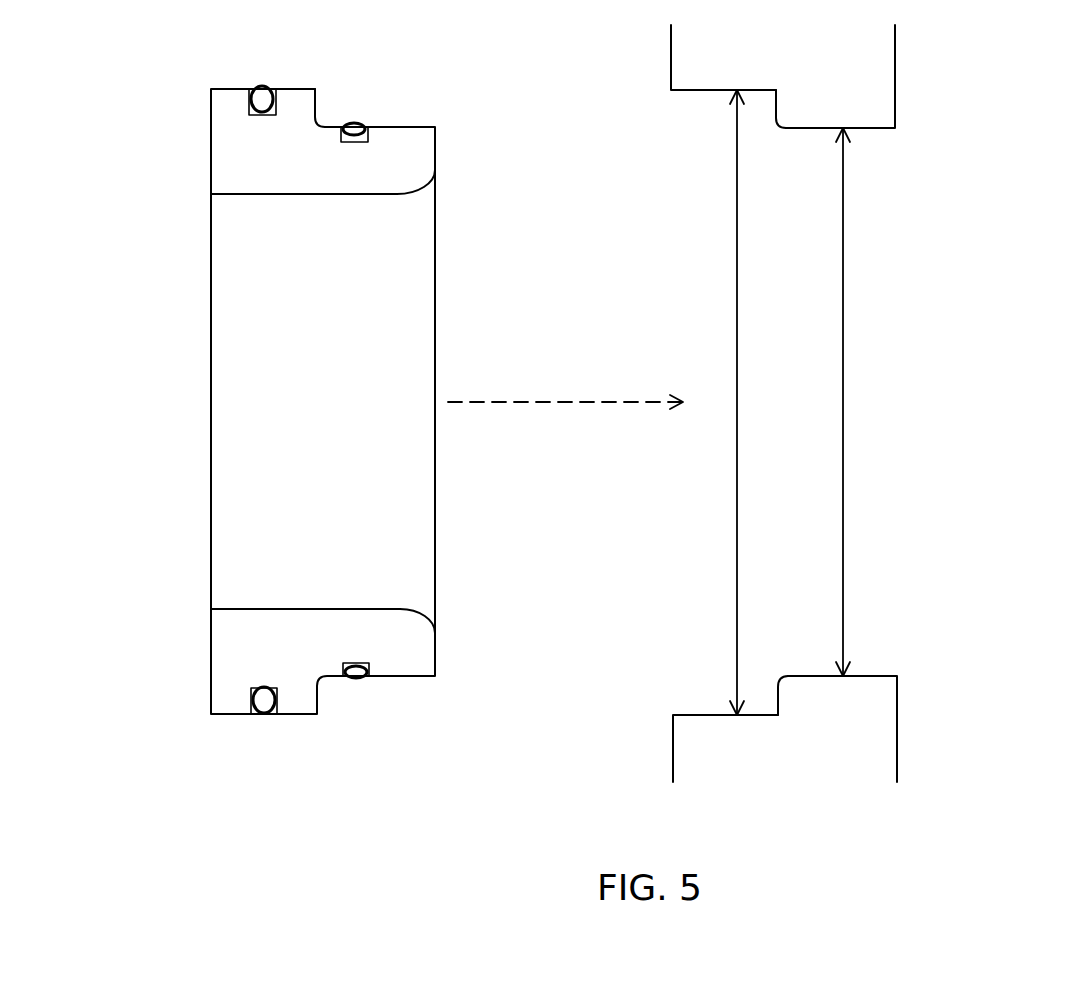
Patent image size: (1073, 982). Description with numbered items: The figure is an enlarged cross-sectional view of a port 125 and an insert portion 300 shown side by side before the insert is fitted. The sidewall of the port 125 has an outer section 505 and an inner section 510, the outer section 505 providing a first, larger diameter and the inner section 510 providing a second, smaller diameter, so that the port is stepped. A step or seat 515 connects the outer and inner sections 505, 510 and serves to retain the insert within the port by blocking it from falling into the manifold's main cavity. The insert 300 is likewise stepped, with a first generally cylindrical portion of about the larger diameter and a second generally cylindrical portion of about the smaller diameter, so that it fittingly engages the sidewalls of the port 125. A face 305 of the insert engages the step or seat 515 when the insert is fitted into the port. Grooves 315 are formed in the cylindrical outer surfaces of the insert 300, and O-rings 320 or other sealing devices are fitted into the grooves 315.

The insert portion 300 is at (282, 418).
The face 305 is at (347, 79).
The grooves 315 is at (251, 694).
The O-rings 320 is at (284, 445).
The port 125 is at (842, 407).
The outer section 505 is at (706, 403).
The inner section 510 is at (867, 403).
The step or seat 515 is at (808, 410).